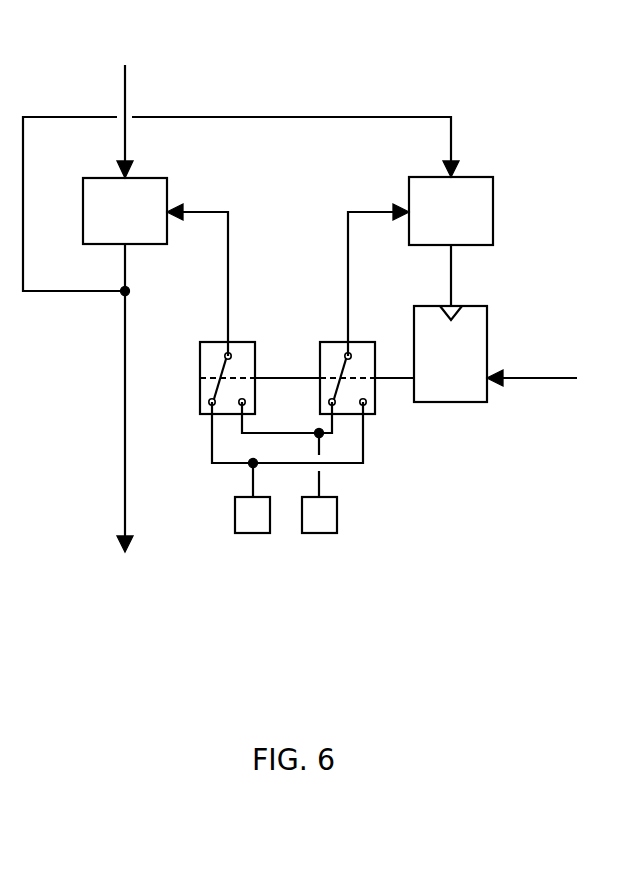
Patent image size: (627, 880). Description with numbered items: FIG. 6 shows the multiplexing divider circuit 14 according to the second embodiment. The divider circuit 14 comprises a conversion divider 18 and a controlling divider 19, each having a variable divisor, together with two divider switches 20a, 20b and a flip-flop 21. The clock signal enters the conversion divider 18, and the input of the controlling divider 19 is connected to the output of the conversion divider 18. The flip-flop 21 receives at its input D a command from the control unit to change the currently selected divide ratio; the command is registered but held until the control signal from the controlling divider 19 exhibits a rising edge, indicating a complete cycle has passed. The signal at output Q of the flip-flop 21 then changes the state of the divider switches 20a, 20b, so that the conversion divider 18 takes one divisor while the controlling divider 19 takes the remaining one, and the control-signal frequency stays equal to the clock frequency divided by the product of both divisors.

The divider circuit 14 is at (459, 88).
The conversion divider 18 is at (155, 187).
The controlling divider 19 is at (482, 187).
The divider switch 20a is at (245, 352).
The divider switch 20b is at (365, 353).
The flip-flop 21 is at (477, 338).